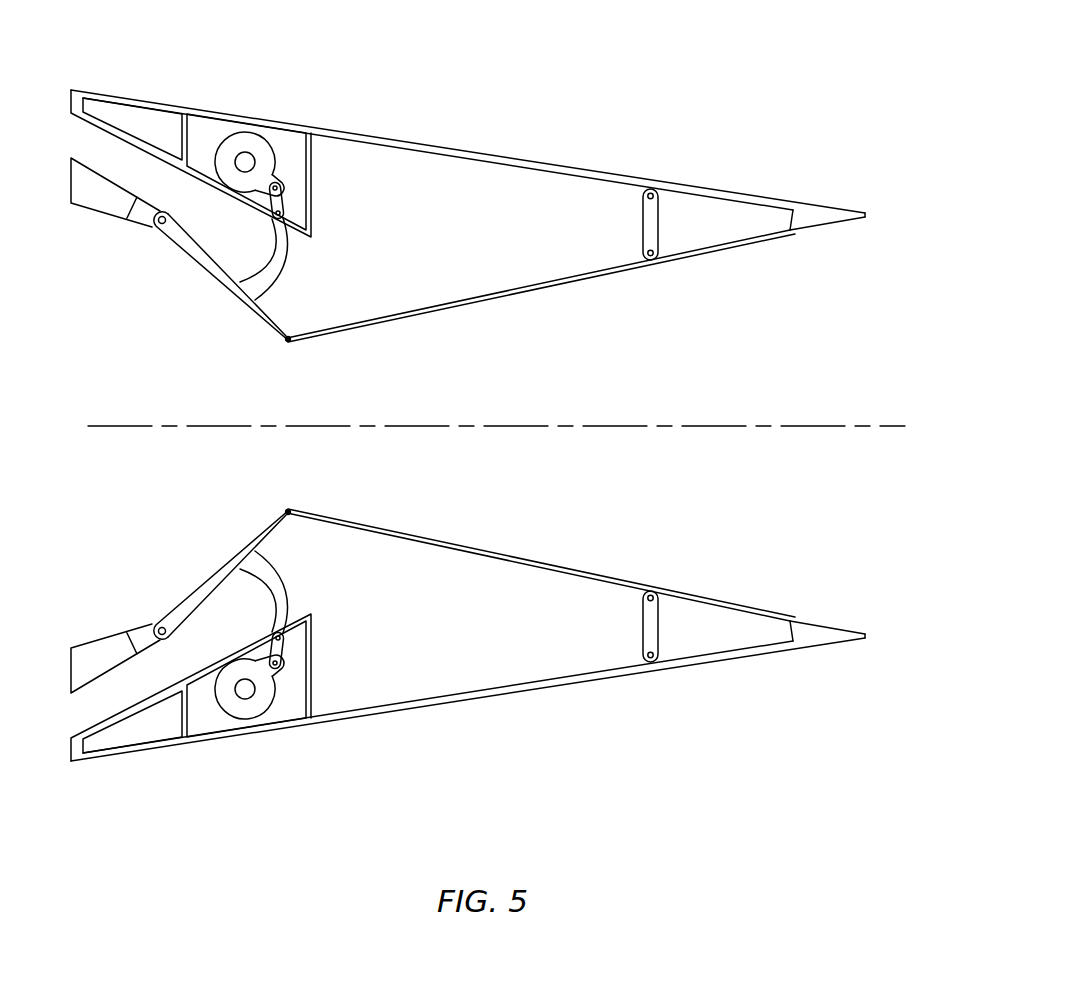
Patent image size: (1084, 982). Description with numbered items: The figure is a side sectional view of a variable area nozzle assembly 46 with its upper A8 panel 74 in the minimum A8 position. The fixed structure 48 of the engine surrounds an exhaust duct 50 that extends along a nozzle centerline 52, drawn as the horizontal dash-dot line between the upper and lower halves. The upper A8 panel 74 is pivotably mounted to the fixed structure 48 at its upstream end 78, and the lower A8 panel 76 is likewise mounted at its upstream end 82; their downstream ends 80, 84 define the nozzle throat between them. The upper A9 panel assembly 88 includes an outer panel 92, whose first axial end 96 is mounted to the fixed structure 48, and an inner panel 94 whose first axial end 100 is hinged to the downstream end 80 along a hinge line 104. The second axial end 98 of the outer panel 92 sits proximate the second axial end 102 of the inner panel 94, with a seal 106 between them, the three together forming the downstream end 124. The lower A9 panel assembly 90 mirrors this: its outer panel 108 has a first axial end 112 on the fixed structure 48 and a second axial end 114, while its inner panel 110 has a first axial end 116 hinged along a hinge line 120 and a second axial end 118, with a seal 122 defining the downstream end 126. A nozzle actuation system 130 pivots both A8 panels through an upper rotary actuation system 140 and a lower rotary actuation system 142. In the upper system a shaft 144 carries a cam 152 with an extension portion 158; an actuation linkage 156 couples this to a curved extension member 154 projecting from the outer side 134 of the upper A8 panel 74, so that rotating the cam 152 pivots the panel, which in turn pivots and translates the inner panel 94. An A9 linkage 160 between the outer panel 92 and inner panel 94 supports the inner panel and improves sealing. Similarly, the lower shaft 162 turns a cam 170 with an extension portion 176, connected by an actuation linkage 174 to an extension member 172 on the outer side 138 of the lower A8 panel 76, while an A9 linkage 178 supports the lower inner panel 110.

The variable area nozzle assembly 46 is at (830, 110).
The fixed structure 48 is at (191, 122).
The exhaust duct 50 is at (117, 477).
The nozzle centerline 52 is at (905, 430).
The upper A8 panel 74 is at (255, 270).
The lower A8 panel 76 is at (219, 577).
The upstream end 78 is at (152, 233).
The downstream end 80 is at (299, 377).
The upstream end 82 is at (151, 615).
The downstream end 84 is at (298, 480).
The upper A9 panel assembly 88 is at (468, 130).
The lower A9 panel assembly 90 is at (468, 726).
The outer panel 92 is at (593, 171).
The inner panel 94 is at (578, 279).
The first axial end 96 is at (388, 122).
The second axial end 98 is at (849, 214).
The first axial end 100 is at (344, 377).
The second axial end 102 is at (859, 235).
The hinge line 104 is at (290, 350).
The seal 106 is at (828, 213).
The outer panel 108 is at (484, 698).
The inner panel 110 is at (501, 556).
The first axial end 112 is at (397, 735).
The second axial end 114 is at (857, 647).
The first axial end 116 is at (344, 480).
The second axial end 118 is at (845, 630).
The hinge line 120 is at (300, 510).
The seal 122 is at (815, 634).
The downstream end 124 is at (879, 214).
The downstream end 126 is at (879, 636).
The nozzle actuation system 130 is at (289, 97).
The outer side 134 is at (216, 268).
The outer side 138 is at (216, 583).
The upper rotary actuation system 140 is at (207, 143).
The lower rotary actuation system 142 is at (207, 708).
The shaft 144 is at (245, 160).
The cam 152 is at (264, 148).
The extension member 154 is at (270, 264).
The actuation linkage 156 is at (292, 198).
The extension portion 158 is at (284, 175).
The A9 linkage 160 is at (653, 230).
The shaft 162 is at (245, 691).
The cam 170 is at (264, 703).
The extension member 172 is at (270, 587).
The actuation linkage 174 is at (292, 653).
The extension portion 176 is at (284, 676).
The A9 linkage 178 is at (654, 622).